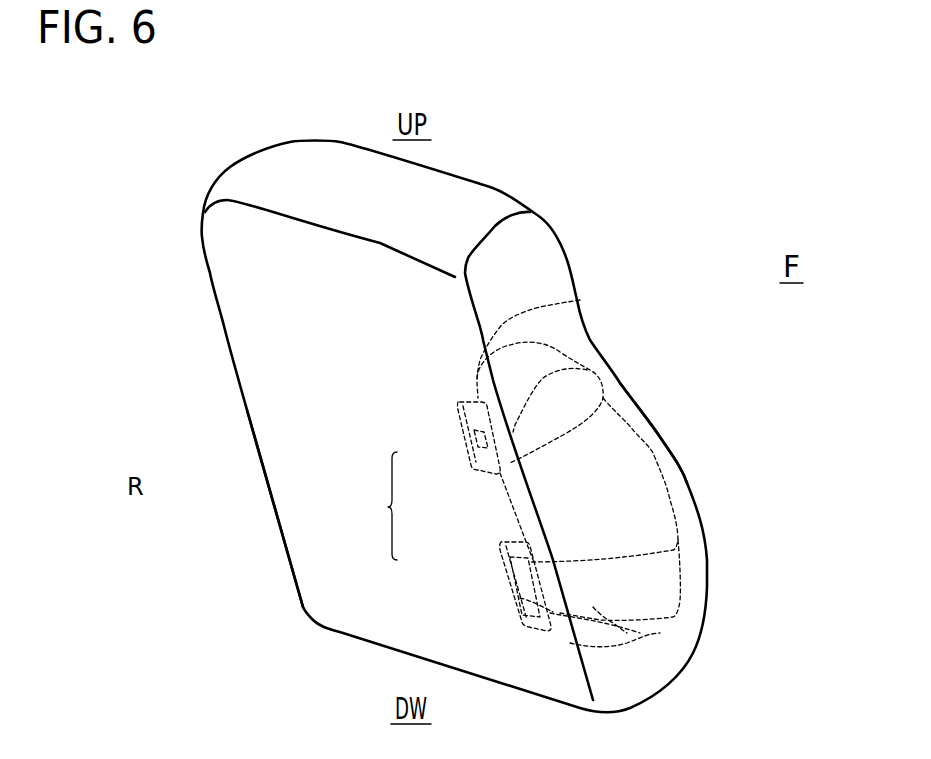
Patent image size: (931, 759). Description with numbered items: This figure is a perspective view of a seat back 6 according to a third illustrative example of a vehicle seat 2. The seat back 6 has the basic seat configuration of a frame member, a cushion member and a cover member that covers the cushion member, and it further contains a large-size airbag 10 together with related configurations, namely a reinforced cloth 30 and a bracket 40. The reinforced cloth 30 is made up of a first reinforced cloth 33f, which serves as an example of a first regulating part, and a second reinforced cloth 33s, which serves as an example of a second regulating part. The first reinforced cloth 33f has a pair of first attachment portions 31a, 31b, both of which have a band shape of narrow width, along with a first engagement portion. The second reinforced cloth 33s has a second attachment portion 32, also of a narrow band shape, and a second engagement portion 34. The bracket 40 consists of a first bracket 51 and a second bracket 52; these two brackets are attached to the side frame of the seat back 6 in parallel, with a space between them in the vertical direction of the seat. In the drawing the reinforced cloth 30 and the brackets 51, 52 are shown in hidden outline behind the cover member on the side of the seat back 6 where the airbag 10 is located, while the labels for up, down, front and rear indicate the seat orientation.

The vehicle seat 2 is at (275, 138).
The seat back 6 is at (290, 430).
The airbag 10 is at (662, 442).
The reinforced cloth 30 is at (691, 464).
The first attachment portion 31a is at (580, 300).
The first attachment portion 31b is at (587, 370).
The second attachment portion 32 is at (645, 633).
The first reinforced cloth 33f is at (570, 398).
The second reinforced cloth 33s is at (672, 575).
The second engagement portion 34 is at (520, 598).
The bracket 40 is at (375, 506).
The first bracket 51 is at (468, 425).
The second bracket 52 is at (507, 573).